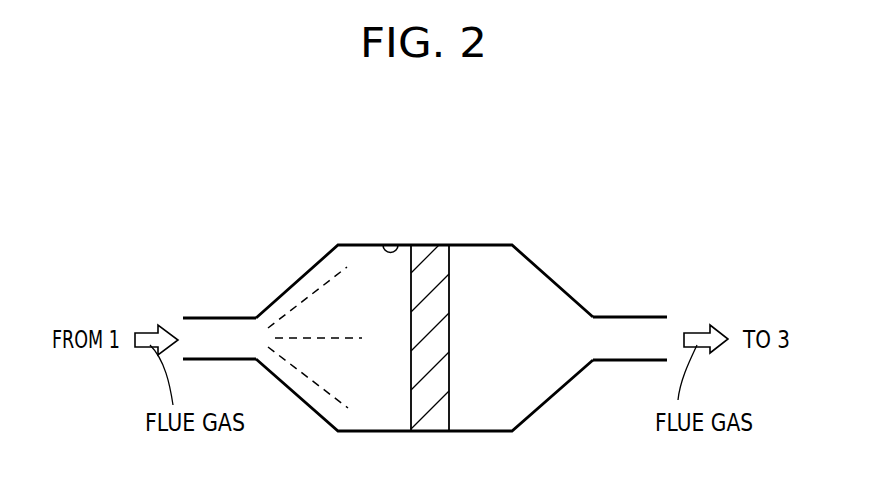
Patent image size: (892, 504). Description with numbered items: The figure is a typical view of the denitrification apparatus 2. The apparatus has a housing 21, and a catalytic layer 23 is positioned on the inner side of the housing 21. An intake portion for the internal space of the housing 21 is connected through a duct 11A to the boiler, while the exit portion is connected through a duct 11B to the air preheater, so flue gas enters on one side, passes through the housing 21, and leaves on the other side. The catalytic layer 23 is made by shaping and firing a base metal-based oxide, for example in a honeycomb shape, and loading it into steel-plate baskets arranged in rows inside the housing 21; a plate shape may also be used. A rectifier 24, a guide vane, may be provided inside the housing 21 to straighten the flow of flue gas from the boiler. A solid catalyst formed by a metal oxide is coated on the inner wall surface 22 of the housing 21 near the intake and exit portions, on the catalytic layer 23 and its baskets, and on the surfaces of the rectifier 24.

The denitrification apparatus 2 is at (481, 244).
The duct 11A is at (213, 317).
The duct 11B is at (622, 317).
The housing 21 is at (372, 243).
The inner wall surface 22 is at (398, 243).
The catalytic layer 23 is at (411, 390).
The rectifier 24 is at (302, 373).